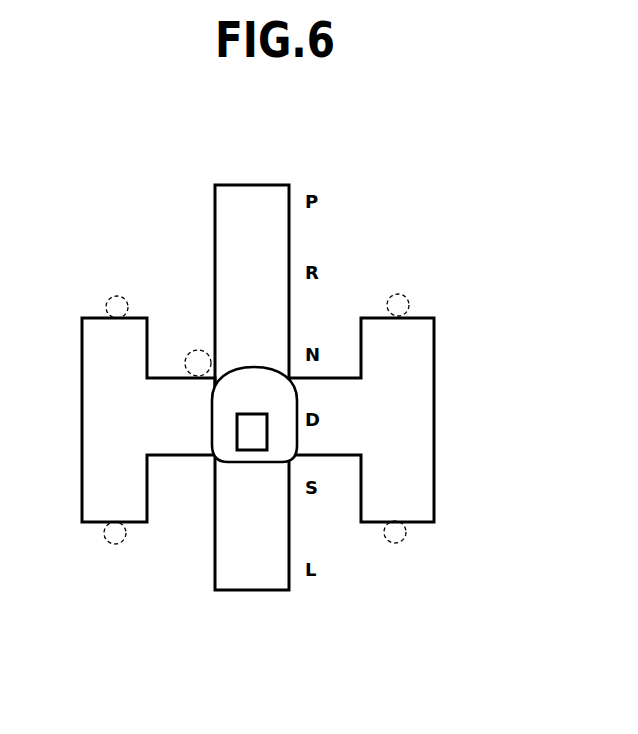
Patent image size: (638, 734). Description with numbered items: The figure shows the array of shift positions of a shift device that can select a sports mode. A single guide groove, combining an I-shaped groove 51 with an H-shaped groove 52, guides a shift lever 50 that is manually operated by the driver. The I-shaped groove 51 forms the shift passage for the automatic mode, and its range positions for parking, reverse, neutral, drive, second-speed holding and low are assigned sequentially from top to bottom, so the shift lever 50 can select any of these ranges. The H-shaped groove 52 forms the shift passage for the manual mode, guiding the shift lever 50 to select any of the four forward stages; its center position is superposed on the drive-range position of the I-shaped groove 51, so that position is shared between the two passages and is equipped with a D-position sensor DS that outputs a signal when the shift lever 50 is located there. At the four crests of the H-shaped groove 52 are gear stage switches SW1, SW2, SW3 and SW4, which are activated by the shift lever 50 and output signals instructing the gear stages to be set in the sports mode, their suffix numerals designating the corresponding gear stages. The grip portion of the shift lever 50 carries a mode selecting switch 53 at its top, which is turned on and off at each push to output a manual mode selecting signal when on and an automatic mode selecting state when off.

The shift lever 50 is at (245, 462).
The I-shaped groove 51 is at (257, 202).
The H-shaped groove 52 is at (420, 497).
The mode selecting switch 53 is at (242, 433).
The gear stage switch SW1 is at (113, 296).
The gear stage switch SW2 is at (112, 544).
The gear stage switch SW3 is at (407, 296).
The gear stage switch SW4 is at (403, 540).
The D-position sensor DS is at (193, 350).